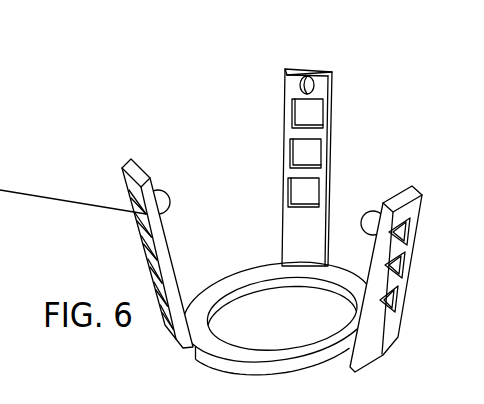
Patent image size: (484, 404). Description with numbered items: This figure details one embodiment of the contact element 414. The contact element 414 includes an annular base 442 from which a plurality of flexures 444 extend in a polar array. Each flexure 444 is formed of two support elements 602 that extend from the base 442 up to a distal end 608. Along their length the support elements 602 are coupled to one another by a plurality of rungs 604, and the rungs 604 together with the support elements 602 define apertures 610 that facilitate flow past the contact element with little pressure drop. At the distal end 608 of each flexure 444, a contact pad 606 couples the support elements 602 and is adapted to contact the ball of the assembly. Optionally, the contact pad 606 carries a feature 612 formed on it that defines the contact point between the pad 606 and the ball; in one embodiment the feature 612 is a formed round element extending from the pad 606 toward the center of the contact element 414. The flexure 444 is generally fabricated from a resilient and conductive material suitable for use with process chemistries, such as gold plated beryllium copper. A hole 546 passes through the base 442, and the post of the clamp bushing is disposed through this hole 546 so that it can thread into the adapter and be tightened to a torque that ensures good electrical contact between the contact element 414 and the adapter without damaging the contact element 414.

The contact element 414 is at (389, 74).
The annular base 442 is at (217, 362).
The flexure 444 is at (304, 68).
The hole 546 is at (314, 290).
The support element 602 is at (284, 111).
The rung 604 is at (308, 168).
The contact pad 606 is at (295, 78).
The distal end 608 is at (323, 66).
The aperture 610 is at (303, 198).
The feature 612 is at (159, 188).